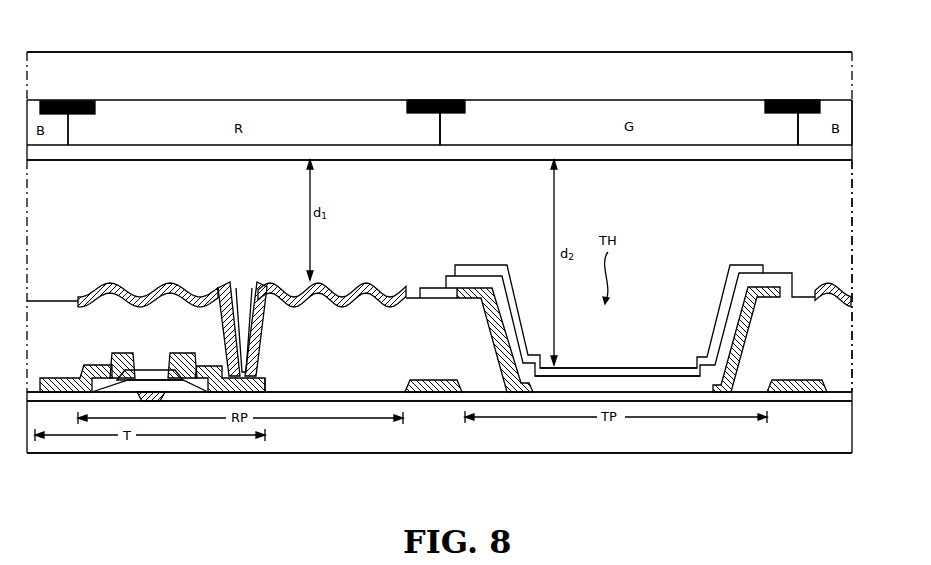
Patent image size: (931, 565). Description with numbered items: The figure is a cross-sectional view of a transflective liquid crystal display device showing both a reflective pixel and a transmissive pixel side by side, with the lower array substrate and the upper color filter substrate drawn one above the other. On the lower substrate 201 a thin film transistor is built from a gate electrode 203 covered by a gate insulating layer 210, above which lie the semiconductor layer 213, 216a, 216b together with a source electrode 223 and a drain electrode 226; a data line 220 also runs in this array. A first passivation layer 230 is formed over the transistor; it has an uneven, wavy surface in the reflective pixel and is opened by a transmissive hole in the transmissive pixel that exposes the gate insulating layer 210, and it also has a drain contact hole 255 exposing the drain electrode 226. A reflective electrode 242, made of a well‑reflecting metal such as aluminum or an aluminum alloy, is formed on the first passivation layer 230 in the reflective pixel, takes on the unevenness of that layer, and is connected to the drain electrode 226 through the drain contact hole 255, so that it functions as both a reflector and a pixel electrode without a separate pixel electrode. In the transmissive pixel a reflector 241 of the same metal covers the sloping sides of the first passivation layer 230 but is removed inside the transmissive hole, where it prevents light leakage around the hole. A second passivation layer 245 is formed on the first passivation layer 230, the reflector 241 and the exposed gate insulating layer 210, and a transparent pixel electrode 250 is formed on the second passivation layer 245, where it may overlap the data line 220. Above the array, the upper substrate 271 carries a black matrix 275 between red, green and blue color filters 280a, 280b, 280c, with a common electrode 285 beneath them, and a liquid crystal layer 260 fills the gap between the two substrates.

The substrate 201 is at (446, 445).
The gate electrode 203 is at (151, 402).
The gate insulating layer 210 is at (357, 390).
The semiconductor layer 213 is at (150, 370).
The semiconductor layer 216a is at (113, 353).
The semiconductor layer 216b is at (196, 354).
The data line 220 is at (441, 378).
The source electrode 223 is at (88, 364).
The drain electrode 226 is at (268, 378).
The first passivation layer 230 is at (369, 308).
The reflector 241 is at (497, 318).
The reflective electrode 242 is at (145, 297).
The second passivation layer 245 is at (671, 383).
The pixel electrode 250 is at (634, 368).
The drain contact hole 255 is at (243, 278).
The liquid crystal layer 260 is at (851, 198).
The upper substrate 271 is at (509, 70).
The black matrix 275 is at (86, 103).
The red color filter 280a is at (178, 123).
The green color filter 280b is at (533, 125).
The blue color filter 280c is at (825, 122).
The common electrode 285 is at (619, 152).